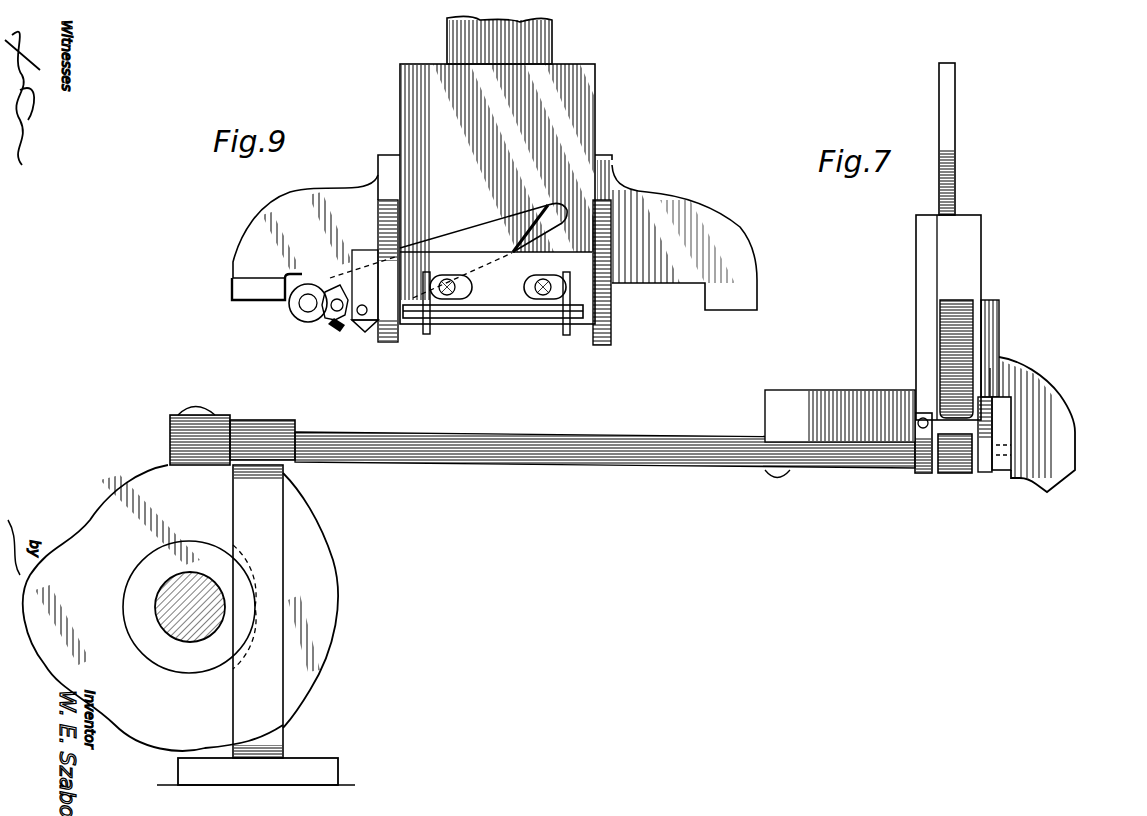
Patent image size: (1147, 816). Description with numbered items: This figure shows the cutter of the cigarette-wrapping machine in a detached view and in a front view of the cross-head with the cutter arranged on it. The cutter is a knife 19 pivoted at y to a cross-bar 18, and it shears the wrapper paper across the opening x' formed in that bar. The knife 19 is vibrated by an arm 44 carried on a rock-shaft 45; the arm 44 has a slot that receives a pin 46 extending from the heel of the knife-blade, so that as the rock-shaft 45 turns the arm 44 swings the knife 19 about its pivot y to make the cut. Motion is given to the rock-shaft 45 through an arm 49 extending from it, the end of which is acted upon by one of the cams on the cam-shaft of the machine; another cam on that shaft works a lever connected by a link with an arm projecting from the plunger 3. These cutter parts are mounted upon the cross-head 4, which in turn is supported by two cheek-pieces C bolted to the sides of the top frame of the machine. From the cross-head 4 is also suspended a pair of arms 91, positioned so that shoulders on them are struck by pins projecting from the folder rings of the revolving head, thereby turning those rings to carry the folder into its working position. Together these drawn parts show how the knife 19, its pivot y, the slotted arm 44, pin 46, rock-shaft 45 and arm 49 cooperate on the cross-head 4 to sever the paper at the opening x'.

In FIG. 9, the plunger 3 is at (548, 52).
In FIG. 7, the plunger 3 is at (957, 168).
In FIG. 9, the cross-head 4 is at (521, 194).
In FIG. 7, the cross-head 4 is at (982, 282).
In FIG. 9, the cross-bar 18 is at (496, 275).
In FIG. 7, the cross-bar 18 is at (1003, 415).
In FIG. 9, the knife 19 is at (483, 227).
In FIG. 7, the knife 19 is at (984, 472).
In FIG. 9, the arm 44 is at (330, 318).
In FIG. 7, the arm 44 is at (955, 475).
In FIG. 9, the rock-shaft 45 is at (300, 306).
In FIG. 7, the rock-shaft 45 is at (578, 452).
In FIG. 9, the pin 46 is at (336, 298).
In FIG. 7, the pin 46 is at (172, 590).
In FIG. 7, the arm 49 is at (170, 432).
In FIG. 9, the arms 91 is at (612, 315).
In FIG. 7, the arms 91 is at (1075, 445).
In FIG. 9, the opening x' is at (493, 315).
In FIG. 9, the pivot y is at (368, 330).
In FIG. 7, the cheek-pieces C is at (180, 608).